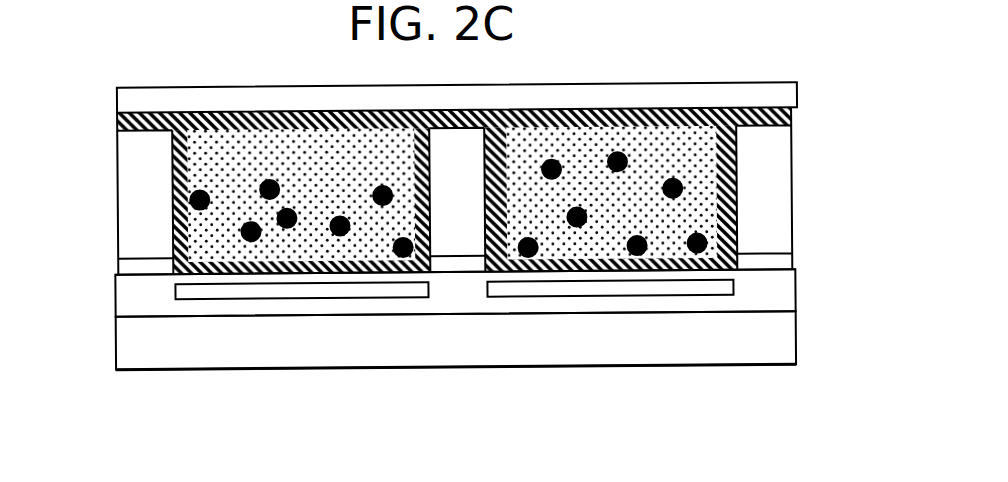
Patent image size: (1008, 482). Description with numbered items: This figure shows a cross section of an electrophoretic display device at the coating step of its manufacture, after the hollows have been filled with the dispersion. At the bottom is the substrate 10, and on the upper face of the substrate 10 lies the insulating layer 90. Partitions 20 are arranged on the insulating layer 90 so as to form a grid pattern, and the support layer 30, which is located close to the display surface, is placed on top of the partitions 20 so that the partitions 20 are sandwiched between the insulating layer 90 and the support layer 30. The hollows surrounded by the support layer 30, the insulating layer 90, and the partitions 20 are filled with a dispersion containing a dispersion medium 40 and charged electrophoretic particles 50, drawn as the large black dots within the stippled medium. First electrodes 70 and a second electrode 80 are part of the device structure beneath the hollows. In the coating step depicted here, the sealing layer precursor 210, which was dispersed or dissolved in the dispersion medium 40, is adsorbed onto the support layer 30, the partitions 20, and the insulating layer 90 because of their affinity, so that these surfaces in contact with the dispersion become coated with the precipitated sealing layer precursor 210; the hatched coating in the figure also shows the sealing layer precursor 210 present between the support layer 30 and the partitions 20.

The substrate 10 is at (796, 338).
The partitions 20 is at (793, 193).
The support layer 30 is at (799, 89).
The dispersion medium 40 is at (176, 177).
The electrophoretic particles 50 is at (341, 233).
The first electrodes 70 is at (217, 300).
The second electrode 80 is at (796, 262).
The insulating layer 90 is at (796, 292).
The sealing layer precursor 210 is at (793, 120).